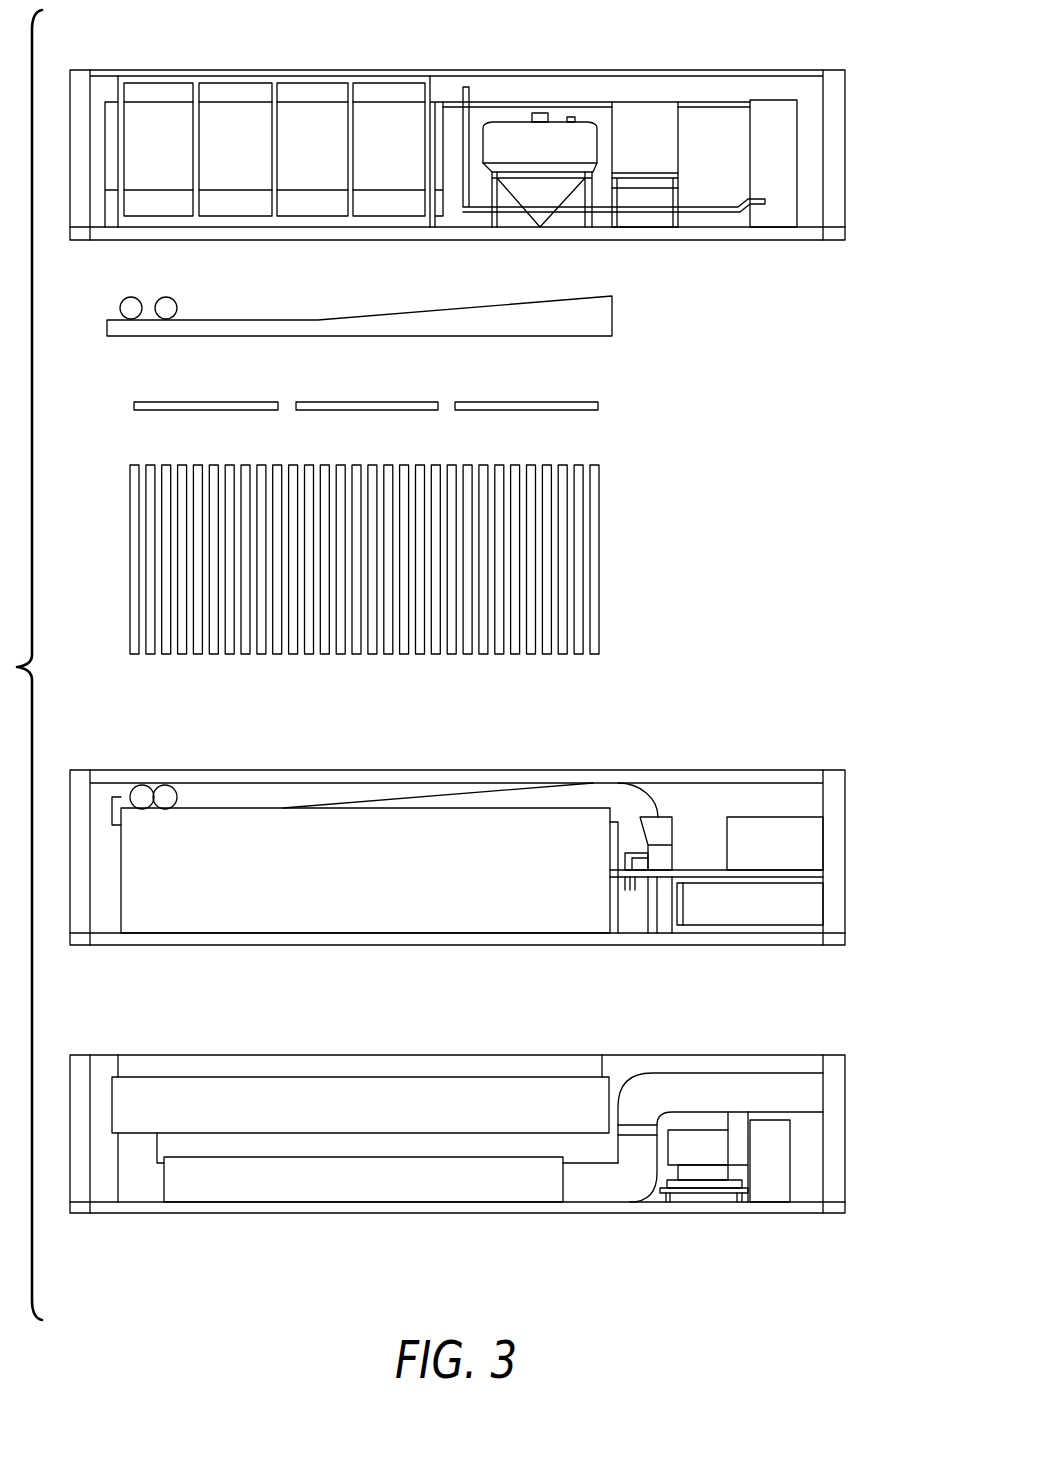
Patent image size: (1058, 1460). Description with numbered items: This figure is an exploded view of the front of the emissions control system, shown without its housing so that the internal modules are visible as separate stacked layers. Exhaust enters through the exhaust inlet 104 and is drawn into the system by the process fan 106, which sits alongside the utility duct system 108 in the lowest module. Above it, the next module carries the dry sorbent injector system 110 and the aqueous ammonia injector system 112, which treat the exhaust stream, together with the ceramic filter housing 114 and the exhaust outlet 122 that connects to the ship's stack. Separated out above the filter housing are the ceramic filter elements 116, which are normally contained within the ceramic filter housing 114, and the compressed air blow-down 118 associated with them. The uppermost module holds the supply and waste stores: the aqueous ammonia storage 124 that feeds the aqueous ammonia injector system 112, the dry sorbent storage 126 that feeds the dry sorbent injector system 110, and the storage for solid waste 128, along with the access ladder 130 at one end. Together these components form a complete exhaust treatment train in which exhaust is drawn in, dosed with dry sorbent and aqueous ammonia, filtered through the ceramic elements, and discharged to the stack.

The exhaust inlet 104 is at (800, 1084).
The process fan 106 is at (700, 1153).
The utility duct system 108 is at (378, 1175).
The dry sorbent injector system 110 is at (620, 805).
The aqueous ammonia injector system 112 is at (805, 832).
The ceramic filter housing 114 is at (247, 888).
The ceramic filter elements 116 is at (595, 543).
The compressed air blow-down 118 is at (602, 313).
The exhaust outlet 122 is at (797, 904).
The aqueous ammonia storage 124 is at (245, 120).
The dry sorbent storage 126 is at (663, 118).
The storage for solid waste 128 is at (518, 143).
The access ladder 130 is at (780, 125).